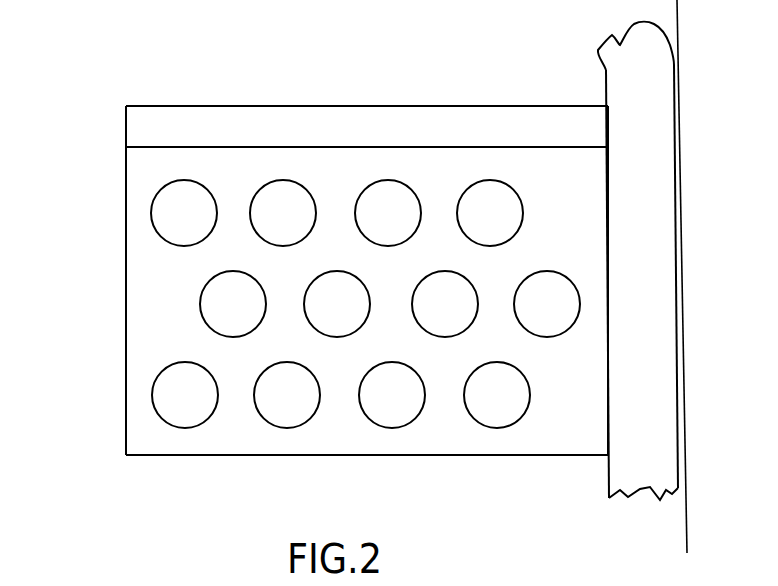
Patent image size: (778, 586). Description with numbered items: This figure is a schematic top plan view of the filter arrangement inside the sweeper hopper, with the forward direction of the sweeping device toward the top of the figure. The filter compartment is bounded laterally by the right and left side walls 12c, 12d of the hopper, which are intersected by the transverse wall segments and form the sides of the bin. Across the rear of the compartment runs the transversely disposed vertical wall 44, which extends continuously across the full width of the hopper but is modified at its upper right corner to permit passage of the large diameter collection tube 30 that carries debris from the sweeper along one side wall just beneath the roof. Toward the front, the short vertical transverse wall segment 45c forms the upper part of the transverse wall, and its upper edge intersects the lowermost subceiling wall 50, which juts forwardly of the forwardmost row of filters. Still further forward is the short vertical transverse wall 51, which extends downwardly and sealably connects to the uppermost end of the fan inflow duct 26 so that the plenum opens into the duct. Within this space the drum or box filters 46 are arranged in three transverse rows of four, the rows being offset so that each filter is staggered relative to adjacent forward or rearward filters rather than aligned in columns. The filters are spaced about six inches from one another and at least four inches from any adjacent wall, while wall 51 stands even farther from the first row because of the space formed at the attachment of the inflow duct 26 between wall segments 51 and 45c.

The right side wall 12c is at (678, 80).
The left side wall 12d is at (126, 286).
The inflow duct 26 is at (380, 138).
The collection tube 30 is at (640, 362).
The transversely disposed vertical wall 44 is at (203, 455).
The vertical transverse wall segment 45c is at (152, 147).
The filters 46 is at (186, 210).
The lowermost subceiling wall 50 is at (568, 425).
The short vertical transverse wall 51 is at (185, 106).